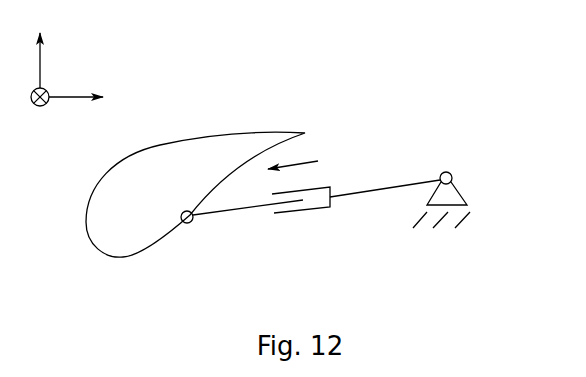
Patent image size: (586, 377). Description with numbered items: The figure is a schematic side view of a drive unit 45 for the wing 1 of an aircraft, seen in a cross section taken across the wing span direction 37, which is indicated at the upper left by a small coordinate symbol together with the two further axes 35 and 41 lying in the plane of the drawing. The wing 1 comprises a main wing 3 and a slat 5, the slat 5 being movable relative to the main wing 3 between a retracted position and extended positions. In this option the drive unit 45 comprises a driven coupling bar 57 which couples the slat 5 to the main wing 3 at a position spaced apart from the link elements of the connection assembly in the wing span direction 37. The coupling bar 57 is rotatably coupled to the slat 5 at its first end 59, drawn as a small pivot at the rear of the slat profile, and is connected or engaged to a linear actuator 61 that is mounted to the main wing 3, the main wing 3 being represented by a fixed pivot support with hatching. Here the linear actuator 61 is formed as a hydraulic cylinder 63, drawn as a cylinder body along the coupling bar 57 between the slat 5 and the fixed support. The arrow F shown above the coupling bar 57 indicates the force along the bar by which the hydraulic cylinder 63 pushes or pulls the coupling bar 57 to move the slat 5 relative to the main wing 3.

The wing 1 is at (292, 77).
The main wing 3 is at (523, 176).
The slat 5 is at (130, 209).
The vertical axis 35 is at (40, 46).
The wing span direction 37 is at (40, 115).
The chordwise axis 41 is at (96, 98).
The drive unit 45 is at (376, 106).
The coupling bar 57 is at (247, 213).
The first end 59 is at (189, 222).
The linear actuator 61 is at (307, 210).
The hydraulic cylinder 63 is at (385, 188).
The force F is at (306, 161).